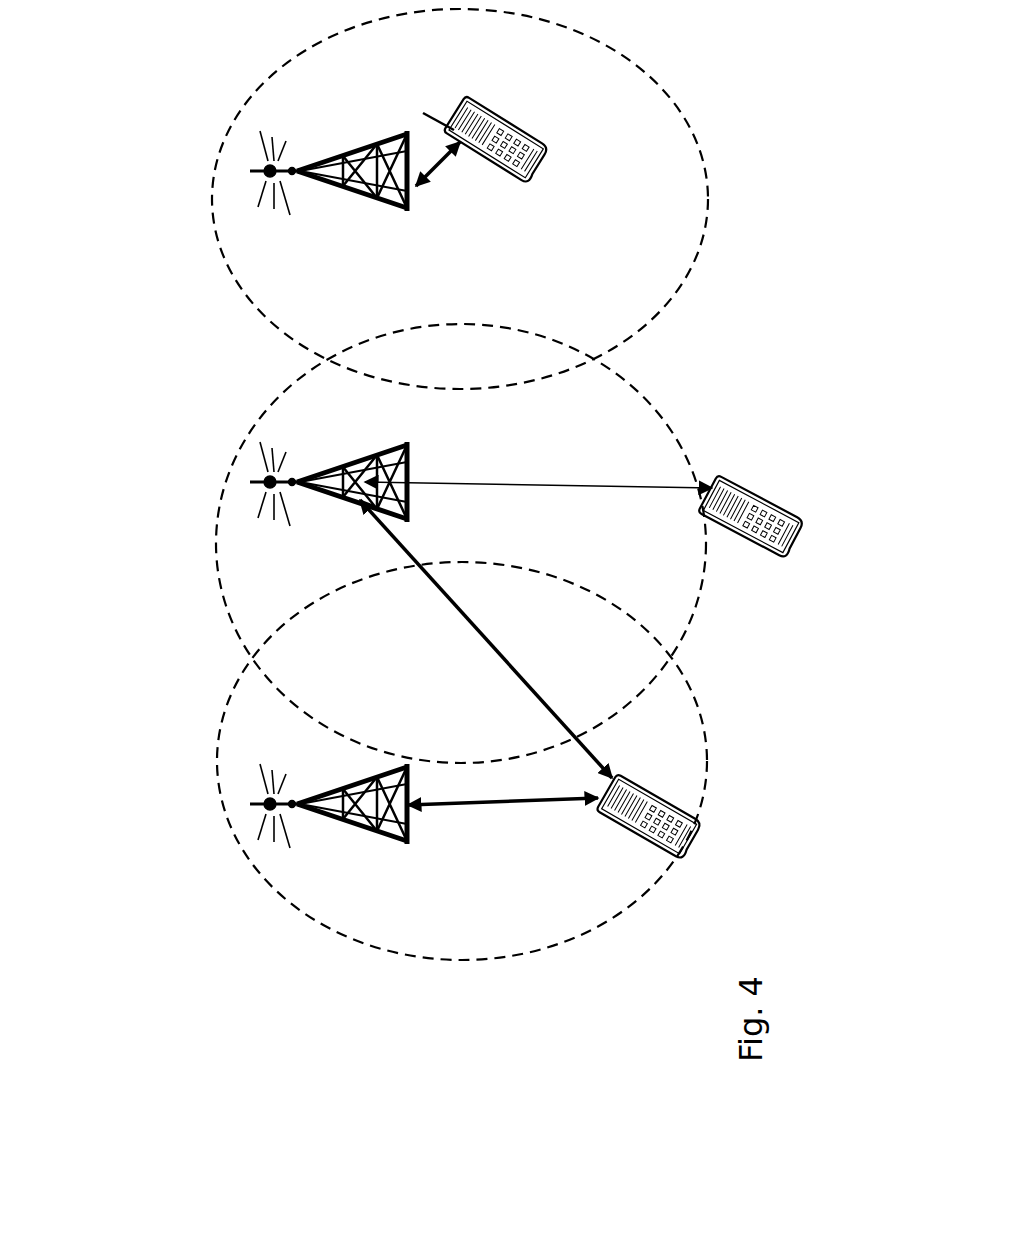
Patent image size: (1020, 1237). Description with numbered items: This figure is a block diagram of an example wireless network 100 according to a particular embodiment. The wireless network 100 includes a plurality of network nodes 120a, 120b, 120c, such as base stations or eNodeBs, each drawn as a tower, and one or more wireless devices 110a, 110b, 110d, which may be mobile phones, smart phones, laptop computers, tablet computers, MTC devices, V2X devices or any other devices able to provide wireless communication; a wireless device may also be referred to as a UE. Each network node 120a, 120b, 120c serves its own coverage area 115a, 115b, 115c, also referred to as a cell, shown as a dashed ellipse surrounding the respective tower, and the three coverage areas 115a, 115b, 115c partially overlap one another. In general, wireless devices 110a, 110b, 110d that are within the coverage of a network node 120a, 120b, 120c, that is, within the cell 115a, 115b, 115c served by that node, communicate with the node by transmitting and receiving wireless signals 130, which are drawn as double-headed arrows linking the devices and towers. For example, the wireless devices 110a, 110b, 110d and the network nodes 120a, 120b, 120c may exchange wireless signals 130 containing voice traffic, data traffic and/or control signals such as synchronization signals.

The wireless network 100 is at (174, 632).
The wireless device 110a is at (662, 852).
The wireless device 110b is at (756, 492).
The wireless device 110d is at (492, 106).
The coverage area 115a is at (462, 761).
The coverage area 115b is at (461, 543).
The coverage area 115c is at (460, 199).
The network node 120a is at (354, 810).
The network node 120b is at (358, 496).
The network node 120c is at (369, 198).
The wireless signals 130 is at (536, 494).